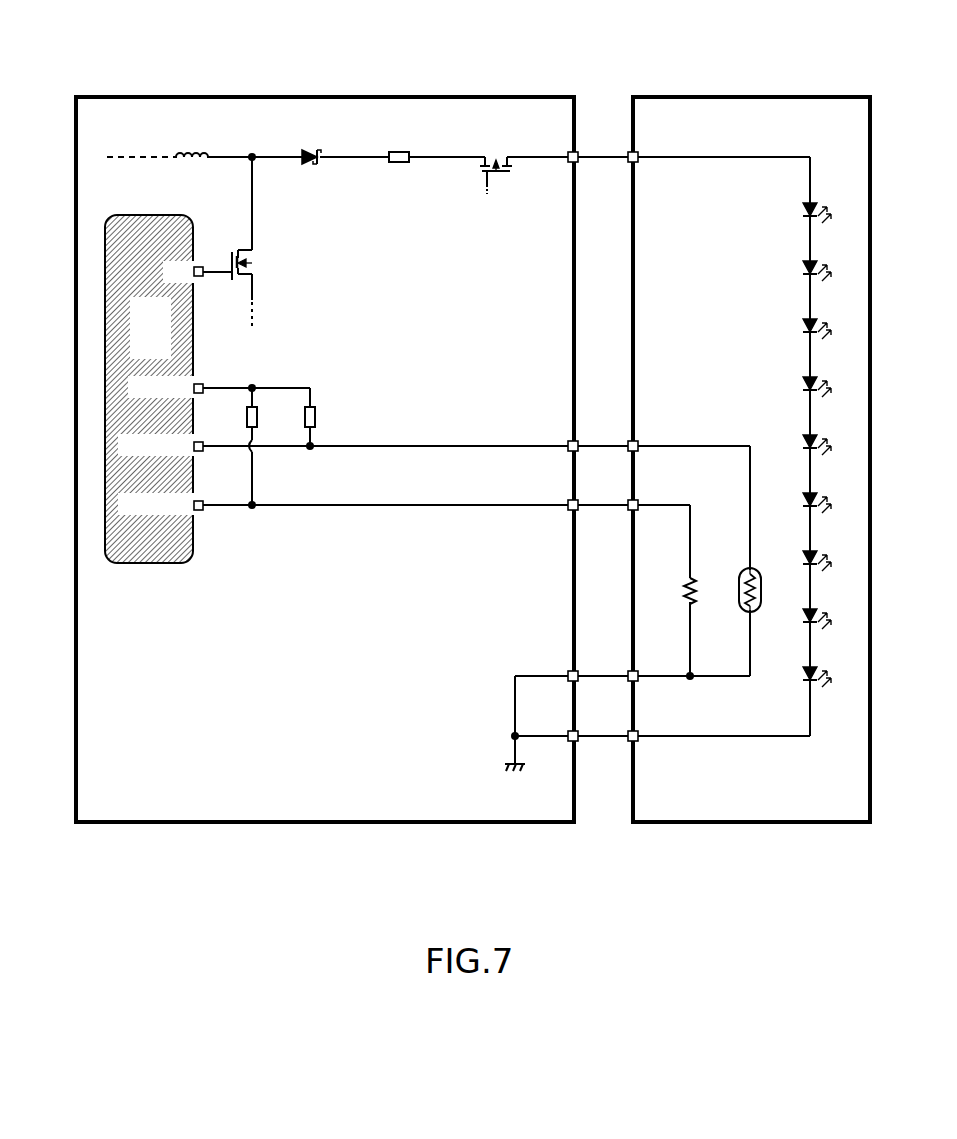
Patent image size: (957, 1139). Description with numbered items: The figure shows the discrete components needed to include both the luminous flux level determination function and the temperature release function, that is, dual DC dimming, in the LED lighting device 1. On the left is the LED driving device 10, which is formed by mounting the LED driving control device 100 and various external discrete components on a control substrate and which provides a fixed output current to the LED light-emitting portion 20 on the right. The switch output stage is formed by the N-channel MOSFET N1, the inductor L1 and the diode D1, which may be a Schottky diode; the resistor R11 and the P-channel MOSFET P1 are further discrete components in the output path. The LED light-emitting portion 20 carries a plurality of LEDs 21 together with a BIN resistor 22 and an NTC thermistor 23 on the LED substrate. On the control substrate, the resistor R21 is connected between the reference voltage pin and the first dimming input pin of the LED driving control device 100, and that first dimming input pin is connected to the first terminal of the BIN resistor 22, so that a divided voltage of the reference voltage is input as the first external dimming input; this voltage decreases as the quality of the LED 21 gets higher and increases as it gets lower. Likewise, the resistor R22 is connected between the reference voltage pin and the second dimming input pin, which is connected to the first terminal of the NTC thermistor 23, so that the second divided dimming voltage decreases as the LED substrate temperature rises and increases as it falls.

The LED lighting device 1 is at (78, 36).
The LED driving device 10 is at (328, 97).
The LED light-emitting portion 20 is at (752, 97).
The LED driving control device 100 is at (154, 215).
The LED 21 is at (800, 211).
The BIN resistor 22 is at (680, 592).
The NTC thermistor 23 is at (738, 592).
The inductor L1 is at (198, 150).
The diode D1 is at (313, 150).
The resistor R11 is at (400, 150).
The P-channel MOSFET P1 is at (498, 152).
The N-channel MOSFET N1 is at (254, 265).
The resistor R21 is at (258, 418).
The resistor R22 is at (316, 418).